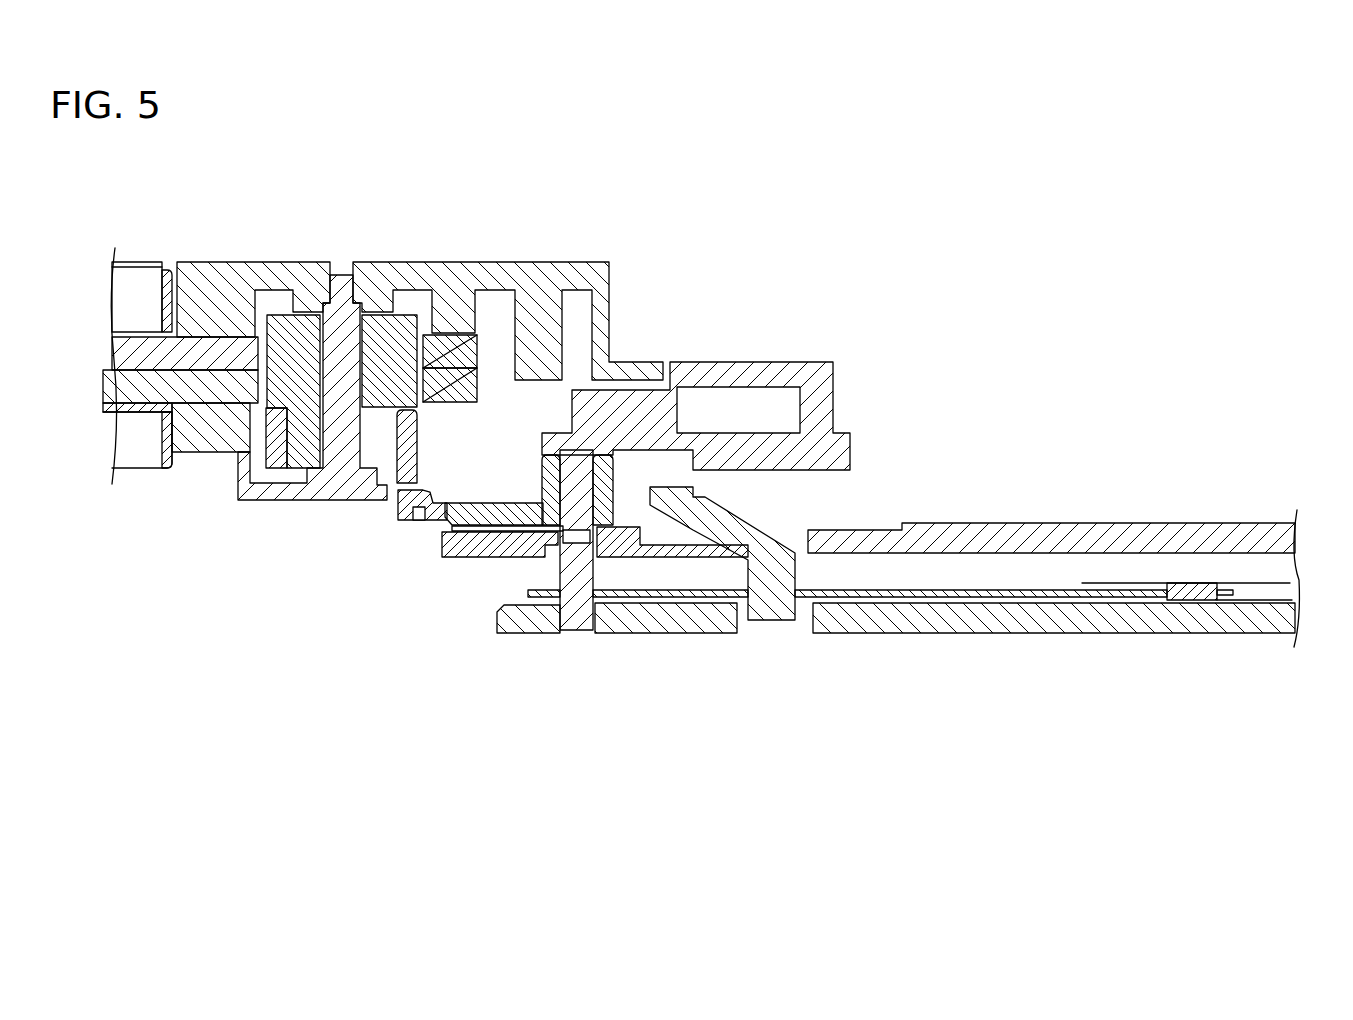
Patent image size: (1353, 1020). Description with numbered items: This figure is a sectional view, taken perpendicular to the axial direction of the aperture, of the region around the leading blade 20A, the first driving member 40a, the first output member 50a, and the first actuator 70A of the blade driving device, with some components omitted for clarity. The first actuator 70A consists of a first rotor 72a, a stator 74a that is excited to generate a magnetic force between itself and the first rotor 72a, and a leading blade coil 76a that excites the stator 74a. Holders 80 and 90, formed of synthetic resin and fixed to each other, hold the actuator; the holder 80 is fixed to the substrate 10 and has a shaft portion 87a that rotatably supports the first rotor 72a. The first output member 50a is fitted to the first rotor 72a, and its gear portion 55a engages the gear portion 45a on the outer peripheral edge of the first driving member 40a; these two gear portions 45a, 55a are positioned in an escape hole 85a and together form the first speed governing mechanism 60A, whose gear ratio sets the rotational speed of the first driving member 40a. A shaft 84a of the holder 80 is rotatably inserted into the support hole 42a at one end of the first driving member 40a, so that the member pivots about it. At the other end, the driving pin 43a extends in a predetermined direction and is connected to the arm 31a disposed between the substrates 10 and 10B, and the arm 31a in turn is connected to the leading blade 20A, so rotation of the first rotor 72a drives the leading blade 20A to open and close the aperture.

The substrate 10 is at (1128, 517).
The substrate 10B is at (1121, 639).
The leading blade 20A is at (1247, 579).
The arm 31a is at (930, 599).
The first driving member 40a is at (497, 528).
The support hole 42a is at (580, 488).
The driving pin 43a is at (770, 572).
The gear portion 45a is at (456, 513).
The first output member 50a is at (392, 509).
The gear portion 55a is at (420, 522).
The first speed governing mechanism 60A is at (393, 531).
The first actuator 70A is at (152, 266).
The first rotor 72a is at (402, 306).
The stator 74a is at (187, 345).
The leading blade coil 76a is at (137, 276).
The holder 80 is at (856, 449).
The shaft 84a is at (585, 482).
The escape hole 85a is at (388, 490).
The shaft portion 87a is at (342, 290).
The holder 90 is at (614, 319).